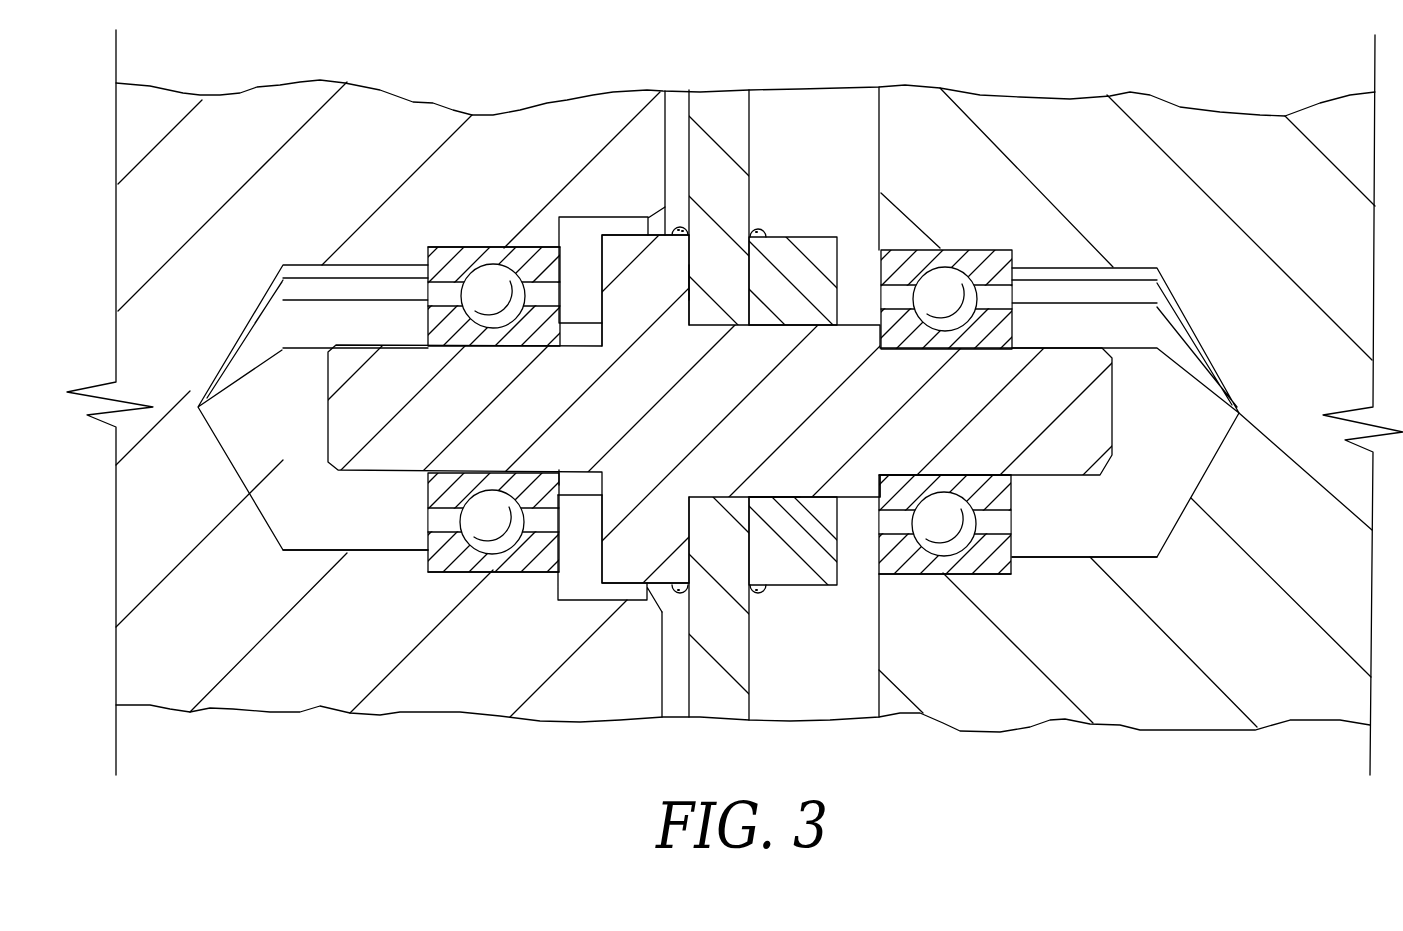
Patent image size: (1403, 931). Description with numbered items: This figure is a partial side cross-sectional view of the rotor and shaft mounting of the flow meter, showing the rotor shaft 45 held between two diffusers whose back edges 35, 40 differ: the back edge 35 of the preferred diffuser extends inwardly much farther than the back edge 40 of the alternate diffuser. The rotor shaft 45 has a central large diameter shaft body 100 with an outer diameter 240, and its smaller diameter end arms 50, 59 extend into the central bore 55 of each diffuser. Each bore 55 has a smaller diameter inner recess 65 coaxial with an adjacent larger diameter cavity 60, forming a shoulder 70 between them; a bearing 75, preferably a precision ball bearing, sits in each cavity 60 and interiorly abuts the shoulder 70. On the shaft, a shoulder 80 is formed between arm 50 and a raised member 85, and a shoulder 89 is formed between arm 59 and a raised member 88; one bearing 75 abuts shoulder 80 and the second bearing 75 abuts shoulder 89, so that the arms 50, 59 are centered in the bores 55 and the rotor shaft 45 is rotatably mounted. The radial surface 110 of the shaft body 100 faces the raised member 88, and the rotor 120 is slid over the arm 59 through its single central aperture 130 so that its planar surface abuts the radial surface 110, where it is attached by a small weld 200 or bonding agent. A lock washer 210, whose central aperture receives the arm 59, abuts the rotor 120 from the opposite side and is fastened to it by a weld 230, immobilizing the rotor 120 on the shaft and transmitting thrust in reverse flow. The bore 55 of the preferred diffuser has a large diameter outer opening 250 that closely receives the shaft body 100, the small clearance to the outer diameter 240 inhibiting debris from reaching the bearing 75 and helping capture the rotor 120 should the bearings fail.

The back edge 35 is at (663, 695).
The back edge 40 is at (878, 693).
The rotor shaft 45 is at (676, 412).
The arm 50 is at (373, 345).
The central bore 55 is at (360, 270).
The arm 59 is at (1060, 348).
The cavity 60 is at (463, 247).
The inner recess 65 is at (311, 549).
The shoulder 70 is at (428, 256).
The bearing 75 is at (447, 540).
The shoulder 80 is at (553, 483).
The raised member 85 is at (606, 497).
The raised member 88 is at (792, 500).
The shoulder 89 is at (880, 480).
The large diameter shaft body 100 is at (623, 582).
The radial surface 110 is at (695, 265).
The rotor 120 is at (742, 133).
The central aperture 130 is at (705, 327).
The weld 200 is at (680, 598).
The lock washer 210 is at (790, 255).
The weld 230 is at (752, 592).
The outer diameter 240 is at (613, 600).
The outer opening 250 is at (563, 233).